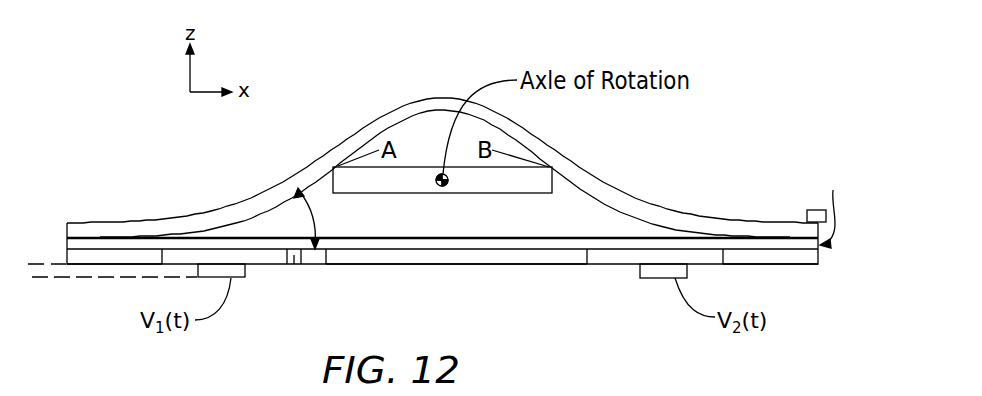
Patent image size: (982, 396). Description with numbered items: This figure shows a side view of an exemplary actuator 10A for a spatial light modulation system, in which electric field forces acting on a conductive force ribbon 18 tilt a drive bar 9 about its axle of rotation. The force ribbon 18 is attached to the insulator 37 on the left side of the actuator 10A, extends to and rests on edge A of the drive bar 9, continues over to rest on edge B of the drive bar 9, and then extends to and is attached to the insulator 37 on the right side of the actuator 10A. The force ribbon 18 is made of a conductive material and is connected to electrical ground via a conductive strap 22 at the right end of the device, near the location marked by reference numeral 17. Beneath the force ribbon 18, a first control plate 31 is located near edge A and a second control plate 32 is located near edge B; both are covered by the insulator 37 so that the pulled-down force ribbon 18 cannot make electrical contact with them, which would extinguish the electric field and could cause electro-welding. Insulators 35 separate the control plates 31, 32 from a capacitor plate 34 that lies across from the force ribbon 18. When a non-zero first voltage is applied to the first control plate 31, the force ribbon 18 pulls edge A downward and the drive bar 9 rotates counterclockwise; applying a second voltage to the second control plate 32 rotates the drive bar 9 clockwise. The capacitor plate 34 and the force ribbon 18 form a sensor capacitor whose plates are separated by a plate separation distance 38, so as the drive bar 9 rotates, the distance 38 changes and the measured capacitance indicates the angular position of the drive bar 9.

The actuator 10A is at (107, 104).
The force ribbon 18 is at (326, 154).
The drive bar 9 is at (402, 167).
The conductive strap 22 is at (815, 209).
The edge of substrate 17 is at (834, 203).
The first control plate 31 is at (237, 257).
The plate separation distance 38 is at (312, 210).
The insulator 37 is at (452, 237).
The second control plate 32 is at (625, 257).
The capacitor plate 34 is at (314, 256).
The insulators 35 is at (77, 255).